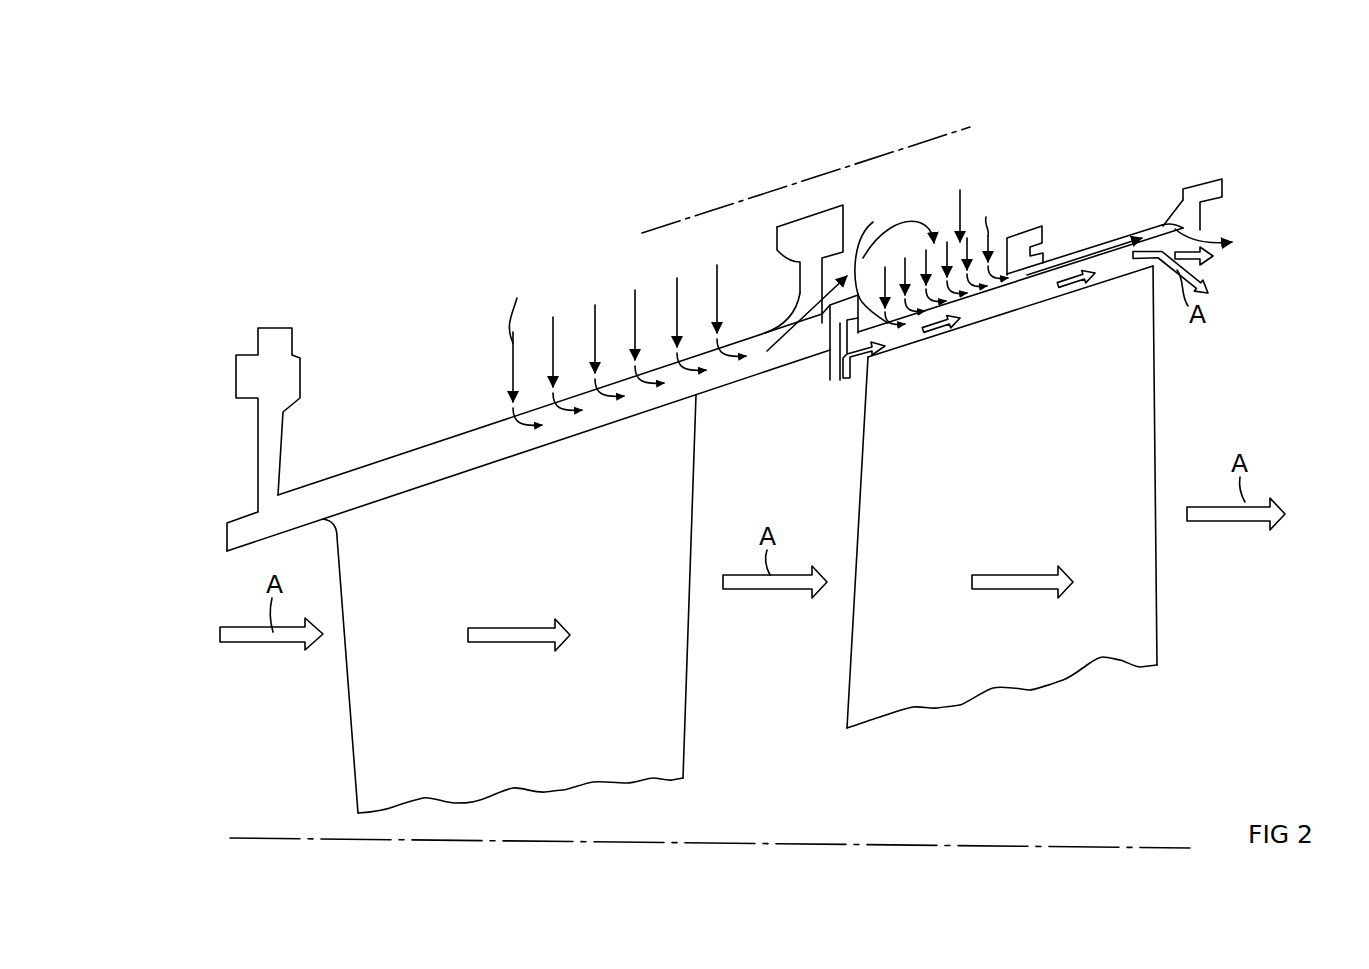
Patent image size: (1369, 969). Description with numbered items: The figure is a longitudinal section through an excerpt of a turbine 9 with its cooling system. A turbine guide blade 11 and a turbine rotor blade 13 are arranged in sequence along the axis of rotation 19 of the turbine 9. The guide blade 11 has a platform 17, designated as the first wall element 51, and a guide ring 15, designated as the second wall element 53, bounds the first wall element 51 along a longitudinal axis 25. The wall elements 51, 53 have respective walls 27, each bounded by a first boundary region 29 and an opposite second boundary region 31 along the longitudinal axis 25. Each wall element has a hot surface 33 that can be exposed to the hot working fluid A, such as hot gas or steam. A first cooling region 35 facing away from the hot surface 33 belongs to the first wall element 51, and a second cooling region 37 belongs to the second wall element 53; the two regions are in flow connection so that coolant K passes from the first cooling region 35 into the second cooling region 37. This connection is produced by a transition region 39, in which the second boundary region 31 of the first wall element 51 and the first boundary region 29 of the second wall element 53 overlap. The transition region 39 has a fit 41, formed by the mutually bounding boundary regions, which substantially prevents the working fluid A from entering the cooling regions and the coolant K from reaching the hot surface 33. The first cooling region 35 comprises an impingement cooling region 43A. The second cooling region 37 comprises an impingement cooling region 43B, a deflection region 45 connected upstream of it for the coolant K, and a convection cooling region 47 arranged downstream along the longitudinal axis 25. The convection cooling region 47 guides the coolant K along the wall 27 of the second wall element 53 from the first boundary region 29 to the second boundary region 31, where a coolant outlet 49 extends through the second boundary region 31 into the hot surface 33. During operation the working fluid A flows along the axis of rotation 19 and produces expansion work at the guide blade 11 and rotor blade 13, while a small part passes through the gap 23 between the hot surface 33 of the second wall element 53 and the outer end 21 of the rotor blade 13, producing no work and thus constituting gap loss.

The turbine 9 is at (1255, 216).
The turbine guide blade 11 is at (383, 692).
The turbine rotor blade 13 is at (900, 647).
The guide ring 15 is at (1067, 257).
The platform 17 is at (372, 477).
The axis of rotation 19 is at (1160, 845).
The outer end of the rotor blade 21 is at (927, 343).
The gap 23 is at (1007, 303).
The longitudinal axis 25 is at (815, 177).
The wall 27 is at (436, 450).
The first boundary region 29 is at (262, 466).
The second boundary region 31 is at (803, 292).
The hot surface 33 is at (748, 378).
The first cooling region 35 is at (615, 310).
The second cooling region 37 is at (1016, 192).
The transition region 39 is at (820, 353).
The fit 41 is at (837, 355).
The impingement cooling region 43A is at (598, 408).
The impingement cooling region 43B is at (975, 312).
The deflection region 45 is at (930, 210).
The convection cooling region 47 is at (1118, 243).
The coolant outlet 49 is at (1158, 227).
The first wall element 51 is at (397, 290).
The second wall element 53 is at (1015, 145).